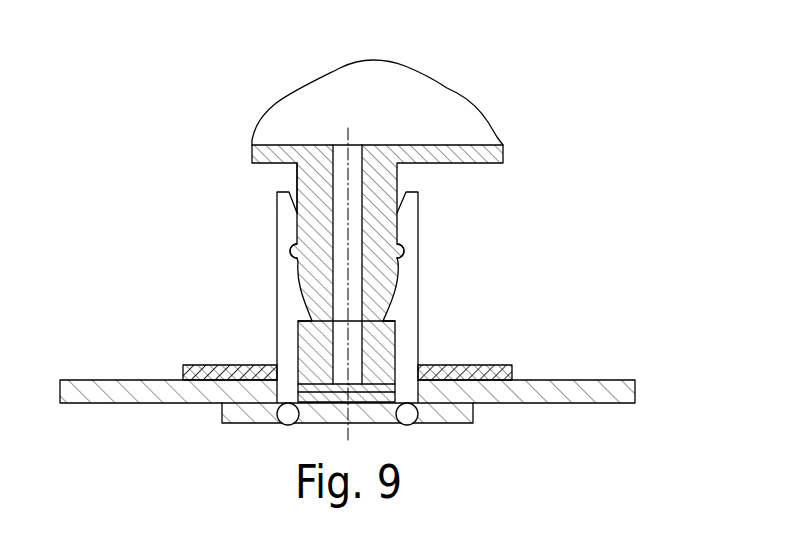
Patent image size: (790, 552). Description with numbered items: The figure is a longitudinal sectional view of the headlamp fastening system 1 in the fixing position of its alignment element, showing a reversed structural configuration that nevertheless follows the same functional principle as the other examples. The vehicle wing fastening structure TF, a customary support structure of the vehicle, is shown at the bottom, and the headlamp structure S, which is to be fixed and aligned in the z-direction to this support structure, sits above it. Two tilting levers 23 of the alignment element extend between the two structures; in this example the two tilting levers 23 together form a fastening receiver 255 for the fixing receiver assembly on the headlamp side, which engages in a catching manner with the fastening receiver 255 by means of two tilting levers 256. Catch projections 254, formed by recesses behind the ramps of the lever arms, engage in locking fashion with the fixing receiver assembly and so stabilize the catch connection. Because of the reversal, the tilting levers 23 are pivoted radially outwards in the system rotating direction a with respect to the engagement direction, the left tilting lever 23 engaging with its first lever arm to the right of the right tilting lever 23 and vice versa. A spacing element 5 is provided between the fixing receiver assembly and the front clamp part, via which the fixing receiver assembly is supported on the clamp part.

The headlamp fastening system 1 is at (530, 112).
The spacing element 5 is at (385, 338).
The tilting lever 23 is at (266, 293).
The catch projection 254 is at (290, 248).
The fastening receiver 255 is at (398, 187).
The tilting lever 256 is at (375, 181).
The headlamp structure S is at (457, 92).
The vehicle wing fastening structure TF is at (562, 404).
The system rotating direction a is at (269, 263).